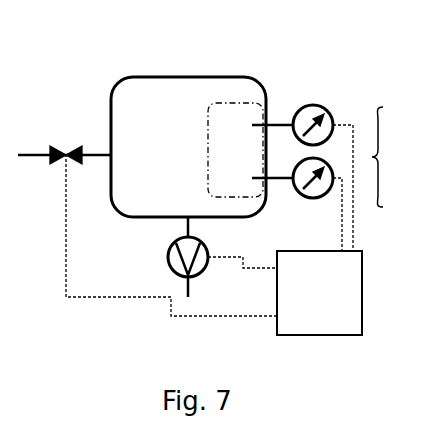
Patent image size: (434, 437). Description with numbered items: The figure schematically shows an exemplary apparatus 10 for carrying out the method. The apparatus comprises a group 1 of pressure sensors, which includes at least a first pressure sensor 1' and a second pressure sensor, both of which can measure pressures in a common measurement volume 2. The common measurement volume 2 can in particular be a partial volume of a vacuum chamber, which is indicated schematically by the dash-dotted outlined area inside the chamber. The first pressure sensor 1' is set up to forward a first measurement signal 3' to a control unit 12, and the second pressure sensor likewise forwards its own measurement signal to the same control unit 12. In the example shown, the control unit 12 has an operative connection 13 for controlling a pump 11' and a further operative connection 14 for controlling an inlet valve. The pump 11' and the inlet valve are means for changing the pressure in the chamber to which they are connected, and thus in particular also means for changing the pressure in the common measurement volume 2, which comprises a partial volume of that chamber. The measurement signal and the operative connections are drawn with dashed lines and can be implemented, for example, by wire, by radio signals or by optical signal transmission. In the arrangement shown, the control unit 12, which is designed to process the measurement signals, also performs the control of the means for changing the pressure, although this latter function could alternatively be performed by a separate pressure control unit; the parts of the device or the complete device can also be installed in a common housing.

The group of pressure sensors 1 is at (394, 157).
The first pressure sensor 1' is at (300, 108).
The common measurement volume 2 is at (237, 103).
The first measurement signal 3' is at (361, 158).
The apparatus 10 is at (201, 49).
The pump 11' is at (163, 292).
The control unit 12 is at (303, 300).
The operative connection 13 is at (228, 258).
The operative connection 14 is at (205, 316).